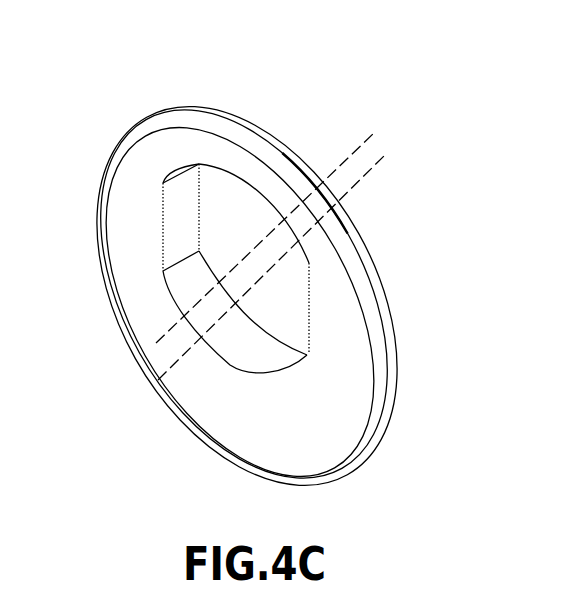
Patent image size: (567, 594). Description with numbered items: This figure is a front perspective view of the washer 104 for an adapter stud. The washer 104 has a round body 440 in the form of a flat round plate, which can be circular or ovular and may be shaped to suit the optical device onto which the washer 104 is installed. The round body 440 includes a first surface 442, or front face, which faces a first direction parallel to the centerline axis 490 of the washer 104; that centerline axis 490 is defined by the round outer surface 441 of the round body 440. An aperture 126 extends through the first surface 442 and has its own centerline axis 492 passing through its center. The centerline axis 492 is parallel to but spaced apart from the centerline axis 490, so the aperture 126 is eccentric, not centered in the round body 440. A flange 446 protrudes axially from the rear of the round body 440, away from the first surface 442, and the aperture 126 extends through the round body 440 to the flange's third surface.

The washer 104 is at (130, 77).
The aperture 126 is at (166, 304).
The round body 440 is at (120, 168).
The outer surface 441 is at (223, 113).
The first surface 442 is at (120, 207).
The flange 446 is at (285, 143).
The centerline axis 490 is at (360, 182).
The centerline axis 492 is at (350, 153).